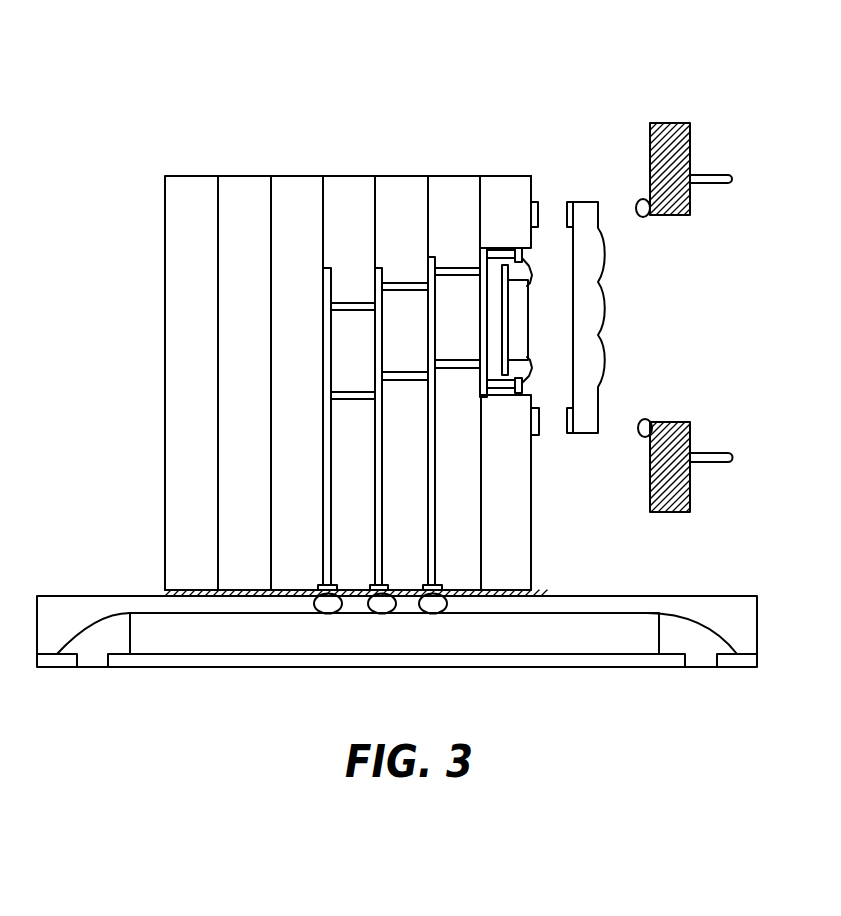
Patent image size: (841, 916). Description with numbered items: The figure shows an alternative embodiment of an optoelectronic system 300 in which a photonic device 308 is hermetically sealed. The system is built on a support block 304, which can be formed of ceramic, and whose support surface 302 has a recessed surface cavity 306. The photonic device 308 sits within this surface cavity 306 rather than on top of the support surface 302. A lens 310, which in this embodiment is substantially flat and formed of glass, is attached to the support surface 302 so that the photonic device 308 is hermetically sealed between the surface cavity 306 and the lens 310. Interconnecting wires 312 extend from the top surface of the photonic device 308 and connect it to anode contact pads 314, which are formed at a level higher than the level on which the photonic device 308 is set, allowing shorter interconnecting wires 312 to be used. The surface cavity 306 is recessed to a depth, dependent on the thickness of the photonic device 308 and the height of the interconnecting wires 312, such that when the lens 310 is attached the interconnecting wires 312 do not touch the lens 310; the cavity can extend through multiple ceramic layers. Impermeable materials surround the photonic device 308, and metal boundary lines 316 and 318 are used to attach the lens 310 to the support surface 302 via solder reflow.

The optoelectronic system 300 is at (556, 75).
The support surface 302 is at (536, 183).
The support block 304 is at (153, 177).
The surface cavity 306 is at (539, 270).
The photonic device 308 is at (556, 306).
The lens 310 is at (600, 280).
The interconnecting wires 312 is at (524, 372).
The anode contact pads 314 is at (532, 395).
The metal boundary line 316 is at (546, 217).
The metal boundary line 318 is at (566, 202).